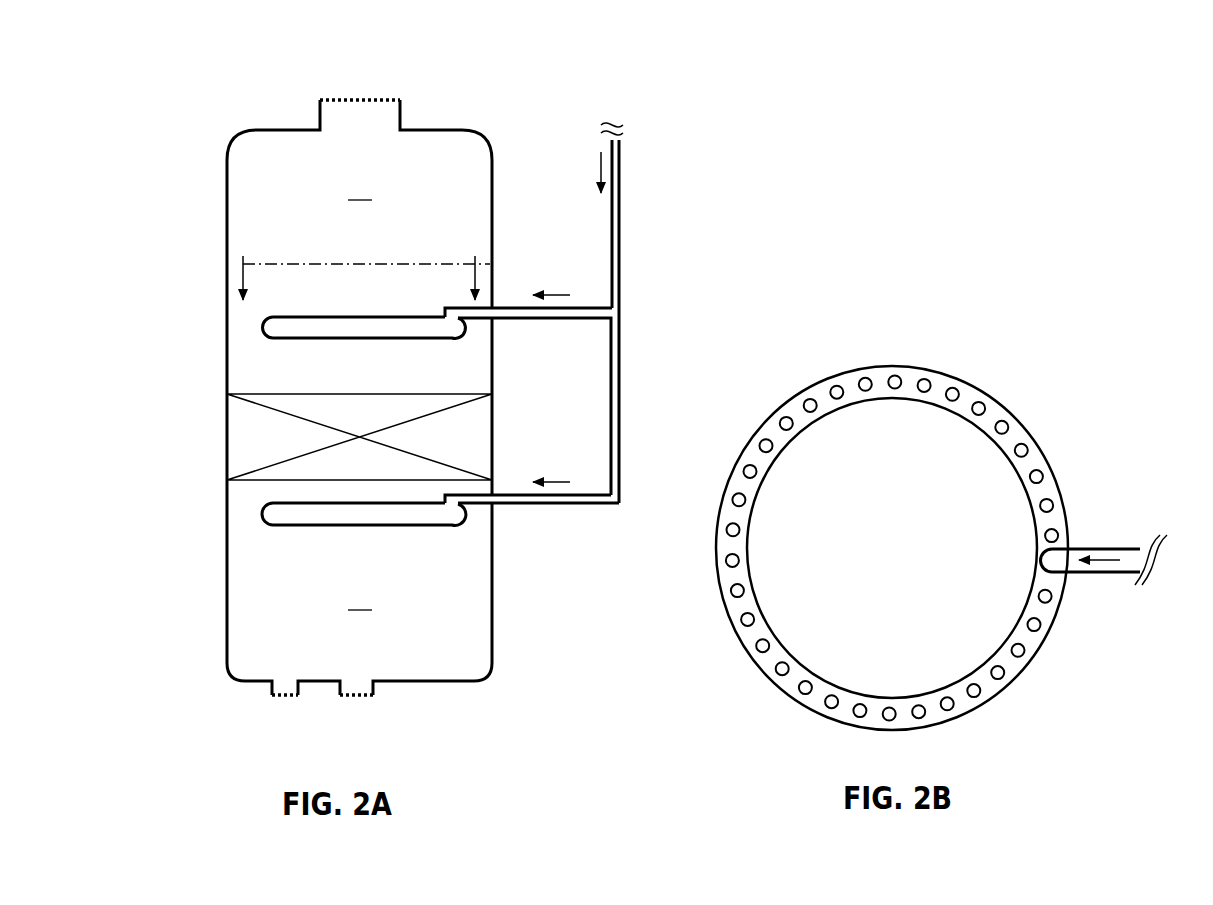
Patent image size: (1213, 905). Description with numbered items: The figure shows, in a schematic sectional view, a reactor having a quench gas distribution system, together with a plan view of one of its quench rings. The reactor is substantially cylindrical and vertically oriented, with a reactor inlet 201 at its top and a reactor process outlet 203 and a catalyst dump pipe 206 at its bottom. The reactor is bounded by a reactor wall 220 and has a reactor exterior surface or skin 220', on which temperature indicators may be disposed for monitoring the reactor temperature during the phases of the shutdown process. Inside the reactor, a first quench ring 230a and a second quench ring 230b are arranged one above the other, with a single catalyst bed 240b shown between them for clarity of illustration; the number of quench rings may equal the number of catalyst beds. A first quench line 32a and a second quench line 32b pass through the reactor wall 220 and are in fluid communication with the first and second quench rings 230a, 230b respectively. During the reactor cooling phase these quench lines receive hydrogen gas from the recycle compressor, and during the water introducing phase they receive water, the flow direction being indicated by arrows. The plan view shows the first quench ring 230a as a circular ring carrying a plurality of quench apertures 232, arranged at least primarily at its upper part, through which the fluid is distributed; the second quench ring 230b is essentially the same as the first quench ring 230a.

In FIG. 2A, the reactor inlet 201 is at (346, 95).
In FIG. 2A, the reactor process outlet 203 is at (362, 704).
In FIG. 2A, the catalyst dump pipe 206 is at (285, 702).
In FIG. 2A, the reactor wall 220 is at (287, 397).
In FIG. 2A, the reactor exterior surface or skin 220' is at (159, 235).
In FIG. 2A, the first quench ring 230a is at (268, 346).
In FIG. 2B, the first quench ring 230a is at (950, 346).
In FIG. 2A, the second quench ring 230b is at (268, 536).
In FIG. 2B, the quench apertures 232 is at (1037, 461).
In FIG. 2A, the catalyst bed 240b is at (258, 438).
In FIG. 2A, the first quench line 32a is at (530, 318).
In FIG. 2B, the first quench line 32a is at (1093, 546).
In FIG. 2A, the second quench line 32b is at (532, 503).